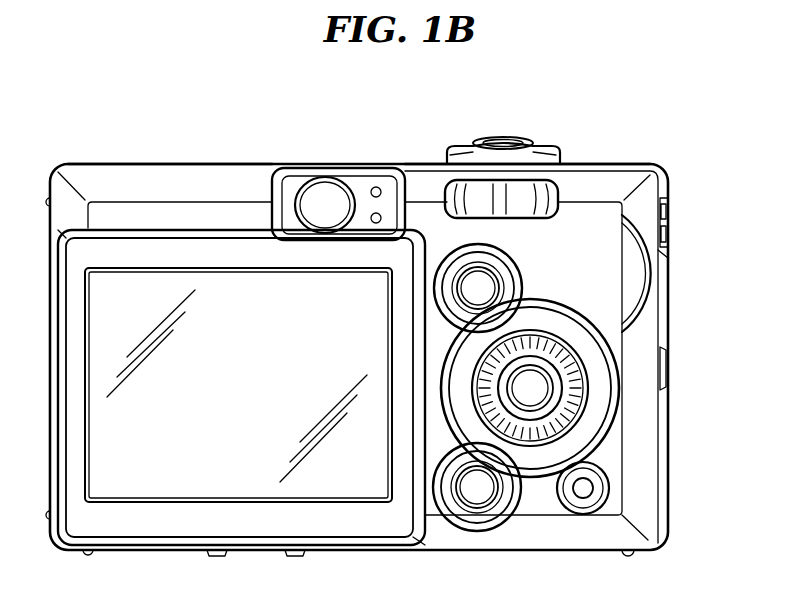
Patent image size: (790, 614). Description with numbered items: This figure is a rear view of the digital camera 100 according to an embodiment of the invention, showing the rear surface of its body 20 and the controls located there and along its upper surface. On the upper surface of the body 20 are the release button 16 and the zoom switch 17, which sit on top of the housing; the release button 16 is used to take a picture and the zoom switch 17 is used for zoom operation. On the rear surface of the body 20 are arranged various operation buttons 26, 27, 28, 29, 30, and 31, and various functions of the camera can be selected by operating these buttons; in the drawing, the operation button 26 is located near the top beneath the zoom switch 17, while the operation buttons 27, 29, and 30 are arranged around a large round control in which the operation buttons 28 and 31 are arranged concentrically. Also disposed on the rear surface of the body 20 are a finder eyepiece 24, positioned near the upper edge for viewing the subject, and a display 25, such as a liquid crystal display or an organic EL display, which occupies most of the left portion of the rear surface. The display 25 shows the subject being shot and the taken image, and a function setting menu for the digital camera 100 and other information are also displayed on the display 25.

The digital camera 100 is at (262, 108).
The body 20 is at (163, 170).
The finder eyepiece 24 is at (325, 197).
The display 25 is at (314, 482).
The release button 16 is at (500, 137).
The zoom switch 17 is at (545, 156).
The operation button 26 is at (533, 199).
The operation button 27 is at (484, 285).
The operation button 28 is at (535, 388).
The operation button 29 is at (477, 490).
The operation button 30 is at (585, 492).
The operation button 31 is at (578, 408).